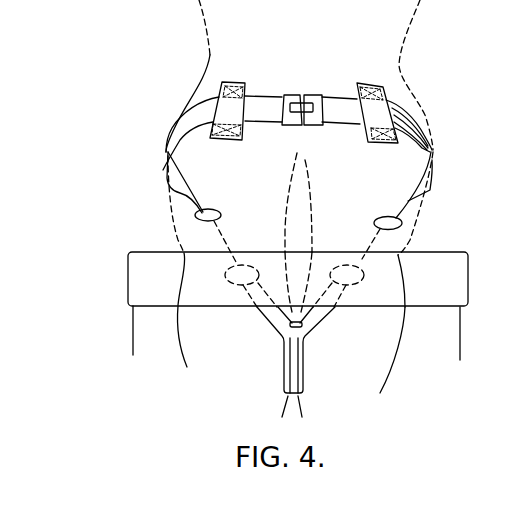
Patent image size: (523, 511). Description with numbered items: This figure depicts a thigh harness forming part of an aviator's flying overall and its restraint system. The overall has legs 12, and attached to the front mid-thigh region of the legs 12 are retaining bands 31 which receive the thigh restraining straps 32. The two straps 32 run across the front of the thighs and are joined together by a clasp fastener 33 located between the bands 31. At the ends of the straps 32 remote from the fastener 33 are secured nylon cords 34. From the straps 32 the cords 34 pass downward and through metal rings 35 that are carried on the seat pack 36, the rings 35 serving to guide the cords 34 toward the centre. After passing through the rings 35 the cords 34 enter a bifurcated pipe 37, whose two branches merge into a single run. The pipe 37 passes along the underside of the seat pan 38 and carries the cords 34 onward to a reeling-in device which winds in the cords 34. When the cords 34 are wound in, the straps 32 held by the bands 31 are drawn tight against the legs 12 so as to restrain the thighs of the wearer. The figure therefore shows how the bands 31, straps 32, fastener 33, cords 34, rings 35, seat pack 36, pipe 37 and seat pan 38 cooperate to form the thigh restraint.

The legs 12 is at (423, 101).
The retaining bands 31 is at (225, 100).
The thigh restraining straps 32 is at (192, 114).
The clasp fastener 33 is at (293, 95).
The nylon cords 34 is at (363, 259).
The metal rings 35 is at (195, 215).
The seat pack 36 is at (128, 273).
The bifurcated pipe 37 is at (303, 390).
The seat pan 38 is at (132, 337).